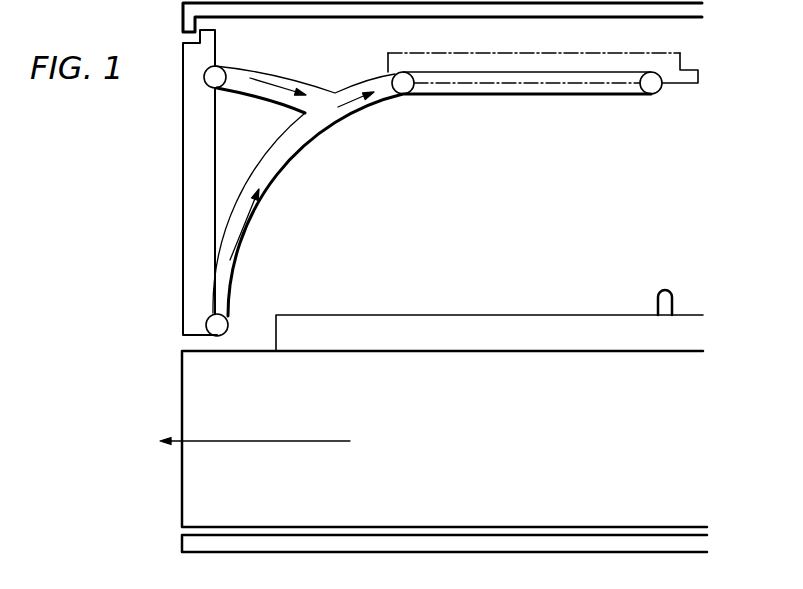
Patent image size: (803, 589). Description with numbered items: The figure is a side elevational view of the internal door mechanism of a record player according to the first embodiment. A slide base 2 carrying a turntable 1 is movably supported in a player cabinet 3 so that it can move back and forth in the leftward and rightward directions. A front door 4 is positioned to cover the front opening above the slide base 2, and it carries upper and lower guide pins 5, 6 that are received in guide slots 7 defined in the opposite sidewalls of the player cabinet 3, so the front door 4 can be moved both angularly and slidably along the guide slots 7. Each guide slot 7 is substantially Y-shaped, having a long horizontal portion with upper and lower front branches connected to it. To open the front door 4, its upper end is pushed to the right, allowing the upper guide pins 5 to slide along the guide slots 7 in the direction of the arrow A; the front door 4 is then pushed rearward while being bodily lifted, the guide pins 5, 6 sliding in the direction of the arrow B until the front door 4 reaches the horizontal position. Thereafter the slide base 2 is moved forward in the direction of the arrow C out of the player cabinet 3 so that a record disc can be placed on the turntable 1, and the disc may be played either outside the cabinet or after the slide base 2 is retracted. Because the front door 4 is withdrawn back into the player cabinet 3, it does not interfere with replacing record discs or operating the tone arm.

The turntable 1 is at (410, 321).
The slide base 2 is at (461, 362).
The player cabinet 3 is at (508, 4).
The front door 4 is at (194, 142).
The upper guide pin 5 is at (218, 72).
The lower guide pin 6 is at (405, 92).
The guide slot 7 is at (487, 97).
The arrow A is at (283, 87).
The arrow B is at (258, 212).
The arrow C is at (268, 440).